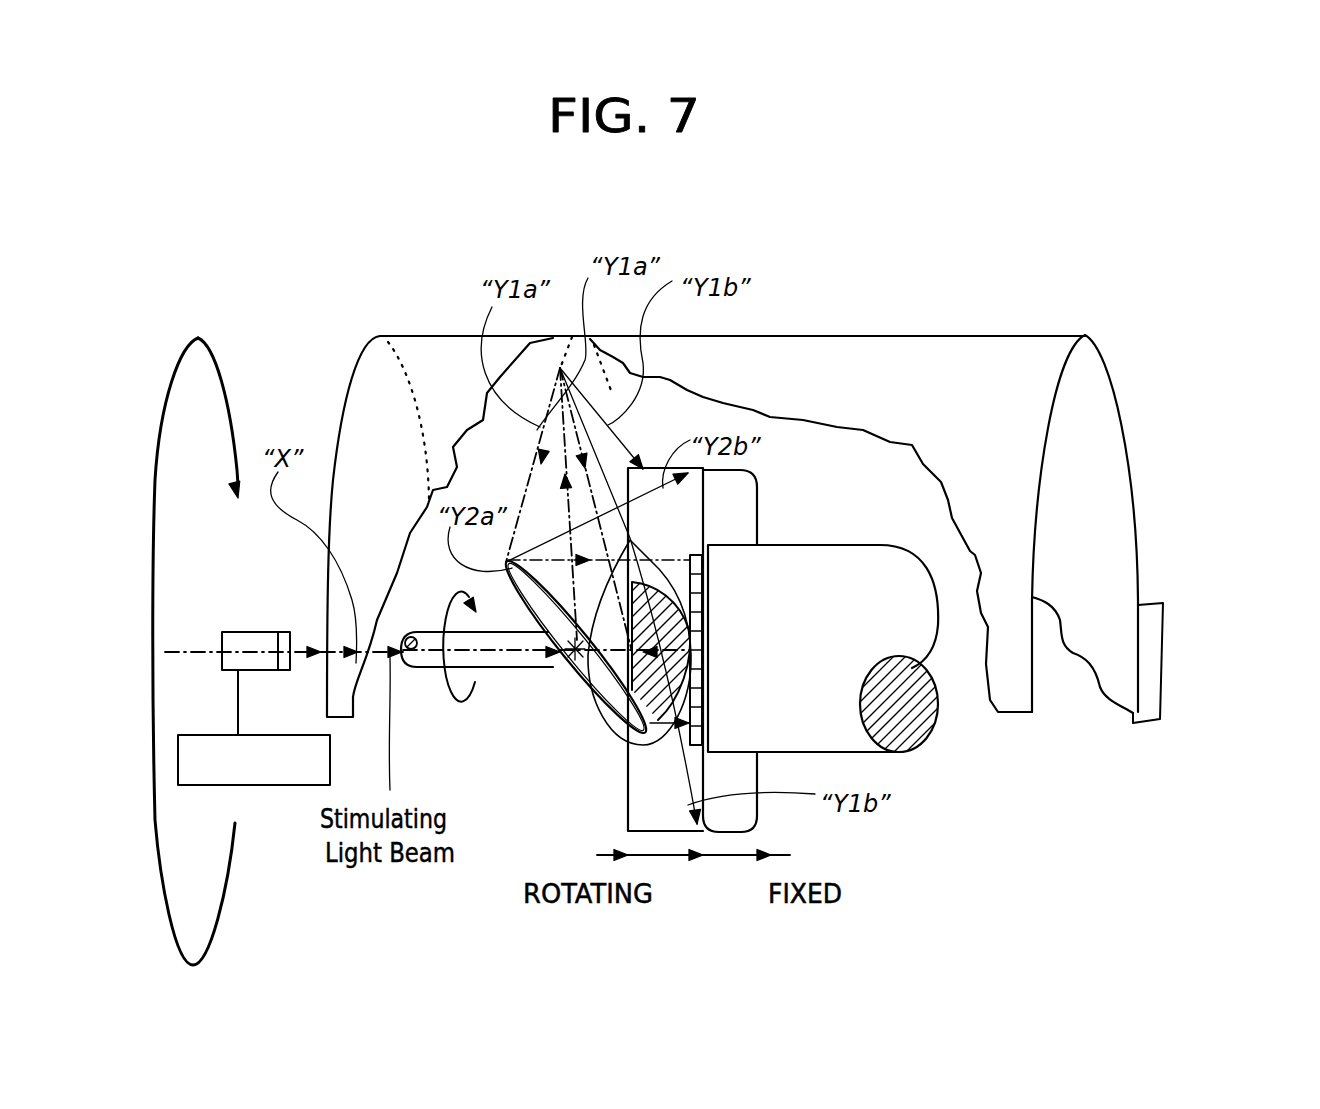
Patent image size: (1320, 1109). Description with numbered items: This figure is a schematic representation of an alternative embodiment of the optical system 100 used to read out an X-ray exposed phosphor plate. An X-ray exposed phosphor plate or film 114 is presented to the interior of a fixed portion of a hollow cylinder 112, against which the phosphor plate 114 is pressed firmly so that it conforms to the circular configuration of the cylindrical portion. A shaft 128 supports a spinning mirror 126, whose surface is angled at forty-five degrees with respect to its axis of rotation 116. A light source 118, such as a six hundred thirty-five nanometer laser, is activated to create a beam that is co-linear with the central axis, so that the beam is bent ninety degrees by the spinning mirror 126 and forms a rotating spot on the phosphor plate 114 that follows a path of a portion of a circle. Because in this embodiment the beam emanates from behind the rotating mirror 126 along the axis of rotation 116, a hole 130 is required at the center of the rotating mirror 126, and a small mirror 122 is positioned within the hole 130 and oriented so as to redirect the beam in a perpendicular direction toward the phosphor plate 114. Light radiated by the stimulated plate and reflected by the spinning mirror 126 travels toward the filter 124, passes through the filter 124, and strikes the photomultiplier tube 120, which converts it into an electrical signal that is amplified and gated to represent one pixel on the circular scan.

The optical system 100 is at (775, 318).
The hollow cylinder 112 is at (1150, 617).
The phosphor plate 114 is at (714, 338).
The axis of rotation 116 is at (205, 645).
The light source 118 is at (262, 630).
The photomultiplier tube 120 is at (820, 683).
The small mirror 122 is at (665, 560).
The filter 124 is at (706, 545).
The spinning mirror 126 is at (618, 724).
The shaft 128 is at (507, 672).
The hole 130 is at (583, 690).